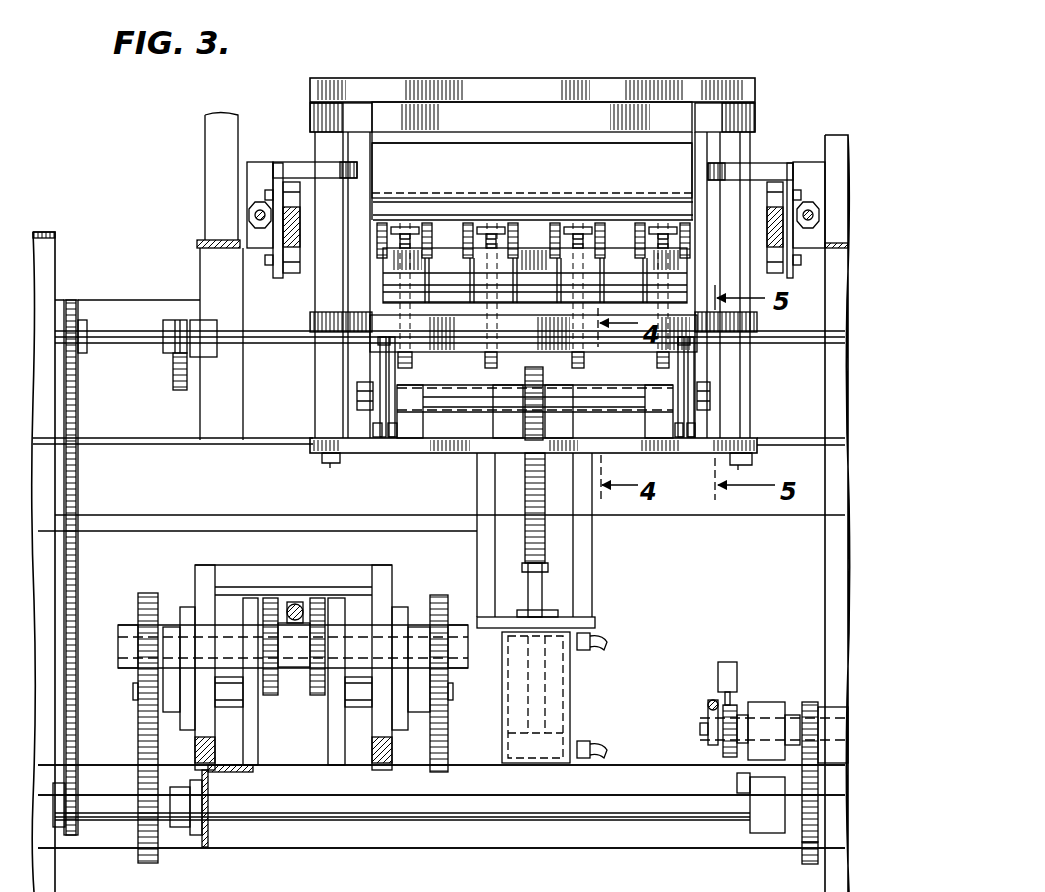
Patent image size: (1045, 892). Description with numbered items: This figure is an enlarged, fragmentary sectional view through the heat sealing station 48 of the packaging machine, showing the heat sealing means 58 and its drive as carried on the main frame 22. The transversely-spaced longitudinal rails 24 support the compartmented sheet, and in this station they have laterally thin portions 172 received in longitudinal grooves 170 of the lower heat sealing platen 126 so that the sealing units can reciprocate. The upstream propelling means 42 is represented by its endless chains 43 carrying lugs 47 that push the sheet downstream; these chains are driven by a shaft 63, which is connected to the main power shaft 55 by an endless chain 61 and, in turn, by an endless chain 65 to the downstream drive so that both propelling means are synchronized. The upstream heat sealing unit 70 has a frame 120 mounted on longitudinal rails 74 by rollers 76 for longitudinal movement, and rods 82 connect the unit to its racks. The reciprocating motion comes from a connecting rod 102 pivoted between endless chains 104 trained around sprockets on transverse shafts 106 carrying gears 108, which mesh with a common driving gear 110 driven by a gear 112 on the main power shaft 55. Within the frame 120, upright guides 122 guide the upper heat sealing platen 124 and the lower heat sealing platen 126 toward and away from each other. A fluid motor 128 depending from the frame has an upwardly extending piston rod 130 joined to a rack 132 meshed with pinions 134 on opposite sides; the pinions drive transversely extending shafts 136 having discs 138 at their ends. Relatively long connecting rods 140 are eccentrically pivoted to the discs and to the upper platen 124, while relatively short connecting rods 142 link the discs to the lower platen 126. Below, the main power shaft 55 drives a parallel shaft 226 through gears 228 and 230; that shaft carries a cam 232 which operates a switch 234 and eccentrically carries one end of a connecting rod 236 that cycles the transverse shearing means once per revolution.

The frame 22 is at (585, 849).
The longitudinal rails 24 is at (478, 230).
The upstream propelling means 42 is at (489, 222).
The endless chains 43 is at (405, 227).
The lugs 47 is at (577, 227).
The heat sealing station 48 is at (658, 77).
The main power shaft 55 is at (472, 808).
The heat sealing means 58 is at (471, 116).
The endless chain 61 is at (78, 556).
The shaft 63 is at (134, 330).
The endless chain 65 is at (172, 388).
The upstream heat sealing unit 70 is at (437, 77).
The longitudinal rails 74 is at (287, 233).
The rollers 76 is at (291, 190).
The rods 82 is at (251, 214).
The connecting rod 102 is at (297, 603).
The endless chains 104 is at (270, 599).
The transverse shafts 106 is at (226, 640).
The gears 108 is at (148, 593).
The driving gear 110 is at (140, 731).
The gear 112 is at (140, 851).
The frame 120 is at (718, 79).
The upright guides 122 is at (330, 388).
The upper heat sealing platen 124 is at (563, 128).
The lower heat sealing platen 126 is at (466, 346).
The fluid motor 128 is at (557, 693).
The piston rod 130 is at (539, 591).
The rack 132 is at (531, 475).
The pinions 134 is at (546, 372).
The shafts 136 is at (597, 397).
The discs 138 is at (391, 438).
The connecting rods 140 is at (365, 358).
The connecting rods 142 is at (389, 368).
The longitudinal grooves 170 is at (426, 266).
The laterally thin portions 172 is at (641, 236).
The shaft 226 is at (748, 713).
The gear 228 is at (805, 863).
The gear 230 is at (810, 702).
The cam 232 is at (723, 749).
The switch 234 is at (719, 671).
The connecting rod 236 is at (709, 713).